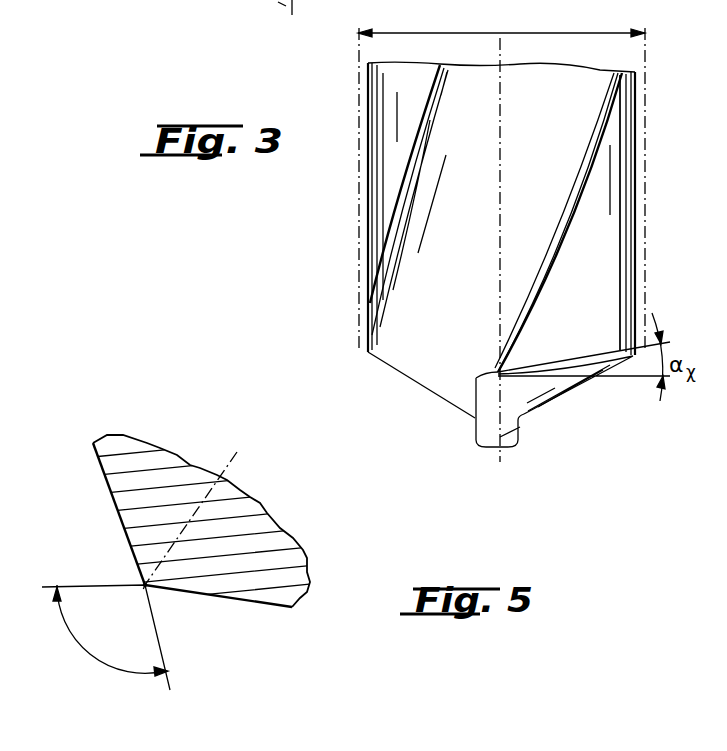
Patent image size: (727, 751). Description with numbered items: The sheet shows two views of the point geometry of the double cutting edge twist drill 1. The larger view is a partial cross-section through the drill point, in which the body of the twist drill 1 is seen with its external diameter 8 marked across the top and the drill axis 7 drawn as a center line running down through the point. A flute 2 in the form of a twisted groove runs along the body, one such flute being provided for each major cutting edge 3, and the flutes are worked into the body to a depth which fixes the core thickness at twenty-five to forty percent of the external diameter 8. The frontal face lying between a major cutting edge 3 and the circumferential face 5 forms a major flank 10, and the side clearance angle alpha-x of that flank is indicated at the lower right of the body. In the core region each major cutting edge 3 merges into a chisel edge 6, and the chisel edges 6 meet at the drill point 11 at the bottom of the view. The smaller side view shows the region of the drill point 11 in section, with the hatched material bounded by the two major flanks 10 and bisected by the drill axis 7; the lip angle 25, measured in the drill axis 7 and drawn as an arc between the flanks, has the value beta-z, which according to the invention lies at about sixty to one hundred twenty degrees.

In FIG. 5, the double cutting edge twist drill 1 is at (640, 123).
In FIG. 5, the flute 2 is at (565, 158).
In FIG. 5, the major cutting edge 3 is at (473, 390).
In FIG. 5, the circumferential face 5 is at (598, 220).
In FIG. 5, the chisel edge 6 is at (503, 448).
In FIG. 5, the drill axis 7 is at (497, 123).
In FIG. 3, the drill axis 7 is at (195, 513).
In FIG. 5, the drill external diameter 8 is at (562, 33).
In FIG. 5, the major flank 10 is at (555, 385).
In FIG. 3, the major flank 10 is at (127, 527).
In FIG. 3, the drill point 11 is at (149, 586).
In FIG. 3, the lip angle 25 is at (88, 658).